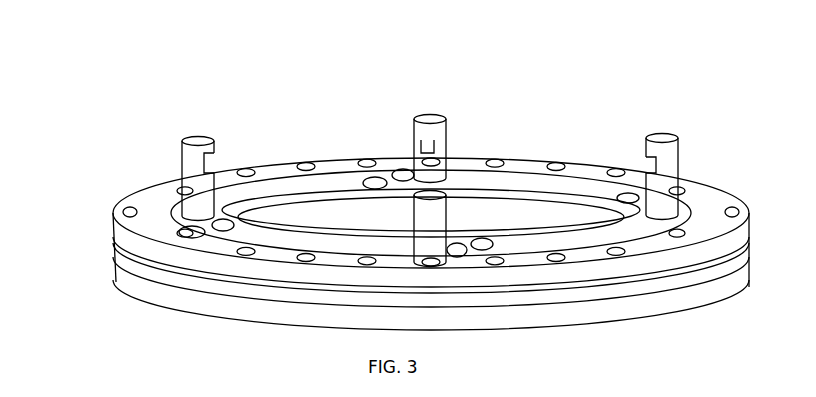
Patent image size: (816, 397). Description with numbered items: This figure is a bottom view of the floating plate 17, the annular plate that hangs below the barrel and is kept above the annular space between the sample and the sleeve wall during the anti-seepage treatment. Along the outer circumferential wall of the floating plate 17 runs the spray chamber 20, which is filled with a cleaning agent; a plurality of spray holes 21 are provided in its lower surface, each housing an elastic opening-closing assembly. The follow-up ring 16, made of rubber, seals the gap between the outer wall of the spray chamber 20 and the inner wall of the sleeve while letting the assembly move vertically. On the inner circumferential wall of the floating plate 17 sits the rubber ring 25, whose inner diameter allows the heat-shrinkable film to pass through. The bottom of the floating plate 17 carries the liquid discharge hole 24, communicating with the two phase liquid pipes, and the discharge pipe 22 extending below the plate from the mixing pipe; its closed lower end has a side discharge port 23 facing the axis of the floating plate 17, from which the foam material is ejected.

The follow-up ring 16 is at (118, 200).
The floating plate 17 is at (173, 197).
The spray chamber 20 is at (267, 175).
The spray hole 21 is at (360, 160).
The discharge pipe 22 is at (413, 148).
The discharge port 23 is at (436, 141).
The liquid discharge hole 24 is at (473, 245).
The rubber ring 25 is at (560, 197).